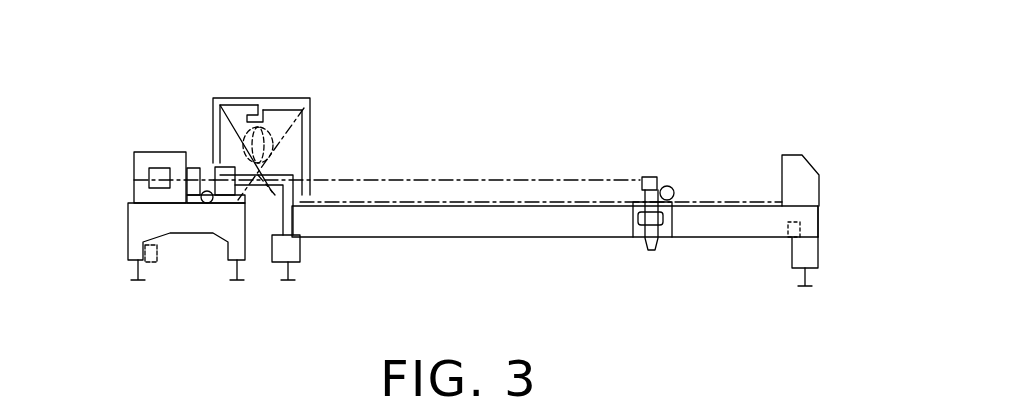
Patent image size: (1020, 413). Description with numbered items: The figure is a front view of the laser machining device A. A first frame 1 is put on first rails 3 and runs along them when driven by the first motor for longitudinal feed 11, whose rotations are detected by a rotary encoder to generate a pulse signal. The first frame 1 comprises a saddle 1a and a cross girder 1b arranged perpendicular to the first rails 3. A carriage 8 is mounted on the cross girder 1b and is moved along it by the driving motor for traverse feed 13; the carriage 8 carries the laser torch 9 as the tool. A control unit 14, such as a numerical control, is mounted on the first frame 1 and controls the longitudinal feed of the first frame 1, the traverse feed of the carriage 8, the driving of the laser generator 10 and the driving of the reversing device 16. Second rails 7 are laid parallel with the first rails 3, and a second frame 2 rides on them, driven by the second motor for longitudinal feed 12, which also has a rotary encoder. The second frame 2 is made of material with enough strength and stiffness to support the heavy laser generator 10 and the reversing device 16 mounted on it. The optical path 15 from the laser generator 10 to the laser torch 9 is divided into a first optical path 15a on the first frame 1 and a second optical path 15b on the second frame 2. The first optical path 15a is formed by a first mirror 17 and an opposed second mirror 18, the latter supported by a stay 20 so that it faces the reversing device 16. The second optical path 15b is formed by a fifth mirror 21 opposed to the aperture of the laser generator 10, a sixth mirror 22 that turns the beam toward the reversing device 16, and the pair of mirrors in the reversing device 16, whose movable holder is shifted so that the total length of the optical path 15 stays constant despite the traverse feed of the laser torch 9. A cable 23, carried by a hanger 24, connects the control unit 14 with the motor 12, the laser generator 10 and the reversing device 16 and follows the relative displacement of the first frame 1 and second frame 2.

The first frame 1 is at (483, 250).
The saddle 1a is at (815, 257).
The cross girder 1b is at (815, 223).
The second frame 2 is at (152, 276).
The first rails 3 is at (292, 275).
The second rails 7 is at (141, 267).
The carriage 8 is at (638, 232).
The laser torch 9 is at (652, 250).
The laser generator 10 is at (142, 162).
The first motor for longitudinal feed 11 is at (787, 225).
The second motor for longitudinal feed 12 is at (157, 263).
The driving motor for traverse feed 13 is at (672, 188).
The control unit 14 is at (807, 173).
The optical path 15 is at (380, 170).
The first optical path 15a is at (488, 182).
The second optical path 15b is at (172, 160).
The reversing device 16 is at (206, 155).
The first mirror 17 is at (653, 176).
The second mirror 18 is at (225, 200).
The stay 20 is at (296, 214).
The fifth mirror 21 is at (134, 181).
The sixth mirror 22 is at (193, 203).
The cable 23 is at (312, 142).
The hanger 24 is at (235, 98).
The machining device A is at (470, 72).